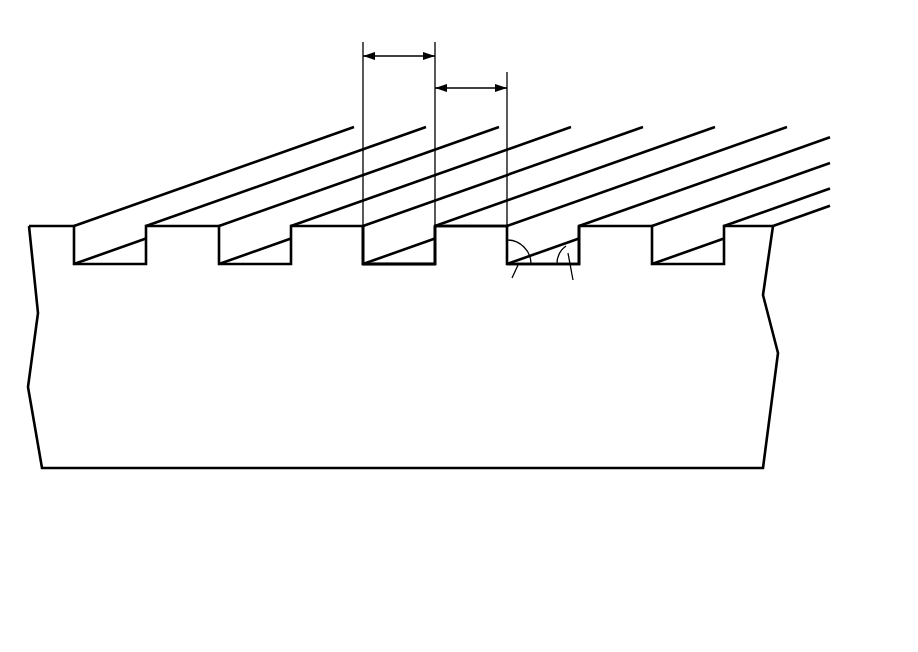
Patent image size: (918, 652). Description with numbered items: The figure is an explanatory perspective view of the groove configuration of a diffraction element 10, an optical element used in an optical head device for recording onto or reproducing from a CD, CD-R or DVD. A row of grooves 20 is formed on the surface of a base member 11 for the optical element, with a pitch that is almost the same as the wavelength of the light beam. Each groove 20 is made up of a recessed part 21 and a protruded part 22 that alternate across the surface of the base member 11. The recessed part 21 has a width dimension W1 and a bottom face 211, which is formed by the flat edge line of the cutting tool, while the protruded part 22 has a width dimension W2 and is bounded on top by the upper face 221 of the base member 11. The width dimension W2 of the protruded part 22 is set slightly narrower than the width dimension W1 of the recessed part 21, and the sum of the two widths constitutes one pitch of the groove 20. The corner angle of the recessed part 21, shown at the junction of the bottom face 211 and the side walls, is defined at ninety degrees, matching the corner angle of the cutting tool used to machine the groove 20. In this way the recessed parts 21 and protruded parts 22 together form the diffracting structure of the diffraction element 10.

The diffraction element 10 is at (222, 116).
The base member 11 is at (785, 227).
The groove 20 is at (462, 338).
The recessed part 21 is at (400, 266).
The protruded part 22 is at (462, 226).
The bottom face 211 is at (417, 255).
The upper face 221 is at (528, 205).
The width dimension of the recessed part W1 is at (399, 127).
The width dimension of the protruded part W2 is at (471, 143).